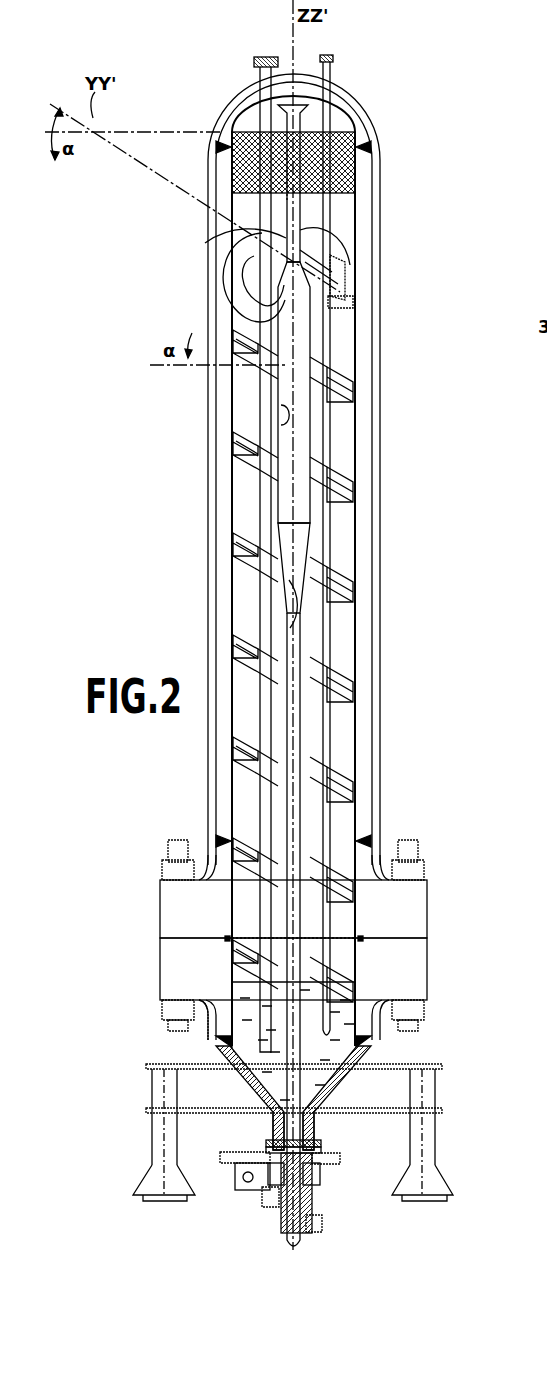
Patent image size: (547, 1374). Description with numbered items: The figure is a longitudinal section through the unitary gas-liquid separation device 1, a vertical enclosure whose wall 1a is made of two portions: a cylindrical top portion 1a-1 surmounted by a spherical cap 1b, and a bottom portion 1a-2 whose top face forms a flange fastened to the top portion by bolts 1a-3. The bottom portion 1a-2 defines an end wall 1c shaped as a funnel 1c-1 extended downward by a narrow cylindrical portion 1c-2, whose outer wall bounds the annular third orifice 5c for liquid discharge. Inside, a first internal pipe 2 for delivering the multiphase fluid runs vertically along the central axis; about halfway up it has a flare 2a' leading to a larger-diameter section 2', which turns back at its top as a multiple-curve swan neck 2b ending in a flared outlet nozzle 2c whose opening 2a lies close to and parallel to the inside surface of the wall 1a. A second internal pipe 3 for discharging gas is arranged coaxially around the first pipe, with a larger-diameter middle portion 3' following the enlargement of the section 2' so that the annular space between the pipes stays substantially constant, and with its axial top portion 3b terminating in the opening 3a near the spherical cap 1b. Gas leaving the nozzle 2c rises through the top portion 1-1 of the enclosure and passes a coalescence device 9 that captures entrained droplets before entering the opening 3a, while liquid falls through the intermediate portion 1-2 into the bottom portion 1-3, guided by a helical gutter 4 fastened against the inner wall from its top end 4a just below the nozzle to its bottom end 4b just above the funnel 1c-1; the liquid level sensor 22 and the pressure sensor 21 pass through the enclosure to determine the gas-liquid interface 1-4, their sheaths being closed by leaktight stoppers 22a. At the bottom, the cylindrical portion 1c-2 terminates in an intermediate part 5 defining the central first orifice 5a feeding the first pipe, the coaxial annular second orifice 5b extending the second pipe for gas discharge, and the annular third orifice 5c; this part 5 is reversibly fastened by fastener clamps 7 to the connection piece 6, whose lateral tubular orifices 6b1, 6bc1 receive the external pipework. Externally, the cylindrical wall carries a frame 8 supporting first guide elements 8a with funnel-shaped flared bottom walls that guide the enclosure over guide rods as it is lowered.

The unitary gas-liquid separation device 1 is at (317, 613).
The enclosure wall 1a is at (350, 888).
The top portion of the enclosure wall 1a-1 is at (396, 910).
The bottom portion of the enclosure wall 1a-2 is at (396, 965).
The bolts 1a-3 is at (418, 850).
The spherical cap 1b is at (362, 100).
The end wall 1c is at (380, 1099).
The funnel 1c-1 is at (330, 1076).
The cylindrical portion of the end wall 1c-2 is at (316, 1140).
The top portion of the enclosure 1-1 is at (345, 212).
The intermediate portion of the enclosure 1-2 is at (345, 452).
The bottom portion of the enclosure 1-3 is at (242, 1007).
The gas-liquid interface 1-4 is at (247, 1013).
The first internal pipe 2 is at (265, 428).
The larger-diameter section of the first internal pipe 2' is at (226, 413).
The open top end of the first internal pipe 2a is at (376, 277).
The flare 2a' is at (234, 557).
The swan neck 2b is at (280, 233).
The outlet nozzle 2c is at (340, 250).
The second internal pipe 3 is at (316, 638).
The larger-diameter middle portion of the second internal pipe 3' is at (351, 392).
The top end of the second internal pipe 3a is at (297, 104).
The axial top portion of the second pipe 3b is at (296, 180).
The helical gutter 4 is at (357, 673).
The top end of the helical gutter 4a is at (345, 304).
The bottom end of the helical gutter 4b is at (345, 995).
The intermediate part 5 is at (221, 1147).
The central first orifice 5a is at (288, 1141).
The annular second orifice 5b is at (288, 1150).
The annular third orifice 5c is at (282, 1156).
The connection piece 6 is at (312, 1202).
The lateral tubular orifice 6b1 is at (272, 1200).
The sleeve lock nut 6bc1 is at (320, 1226).
The fastener clamps 7 is at (244, 1160).
The frame 8 is at (297, 1129).
The first guide elements 8a is at (150, 1188).
The coalescence device 9 is at (240, 162).
The pressure sensor 21 is at (325, 95).
The liquid level sensor 22 is at (243, 536).
The leaktight stoppers 22a is at (262, 56).